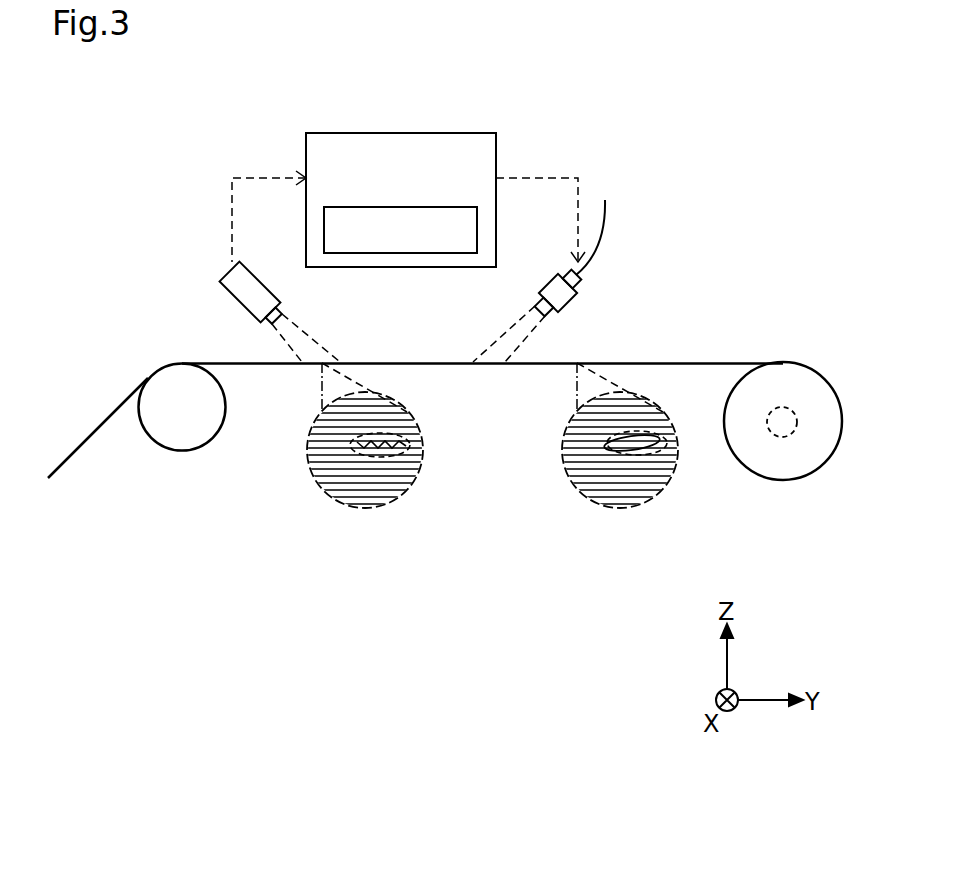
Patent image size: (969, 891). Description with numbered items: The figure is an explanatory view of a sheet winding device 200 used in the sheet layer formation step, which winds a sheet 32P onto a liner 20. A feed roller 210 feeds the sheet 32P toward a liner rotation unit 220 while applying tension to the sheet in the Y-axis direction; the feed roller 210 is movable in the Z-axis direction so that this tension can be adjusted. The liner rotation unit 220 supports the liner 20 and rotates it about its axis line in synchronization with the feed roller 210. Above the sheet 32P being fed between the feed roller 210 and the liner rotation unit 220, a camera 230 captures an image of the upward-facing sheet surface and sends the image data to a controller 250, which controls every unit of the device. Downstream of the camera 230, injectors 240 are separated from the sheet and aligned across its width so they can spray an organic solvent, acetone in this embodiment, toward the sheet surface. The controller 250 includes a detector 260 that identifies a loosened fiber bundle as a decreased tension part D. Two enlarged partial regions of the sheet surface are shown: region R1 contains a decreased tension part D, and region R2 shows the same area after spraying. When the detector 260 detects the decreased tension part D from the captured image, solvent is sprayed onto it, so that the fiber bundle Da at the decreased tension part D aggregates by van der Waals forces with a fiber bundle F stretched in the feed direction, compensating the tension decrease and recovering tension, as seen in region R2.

The sheet winding device 200 is at (728, 254).
The controller 250 is at (452, 133).
The detector 260 is at (401, 207).
The camera 230 is at (237, 306).
The injector 240 is at (575, 303).
The sheet 32P is at (88, 437).
The feed roller 210 is at (182, 451).
The liner 20 is at (780, 481).
The liner rotation unit 220 is at (797, 430).
The partial region R1 is at (408, 492).
The partial region R2 is at (665, 492).
The decreased tension part D is at (407, 412).
The fiber bundle at the decreased tension part Da is at (400, 452).
The fiber bundle F is at (387, 438).